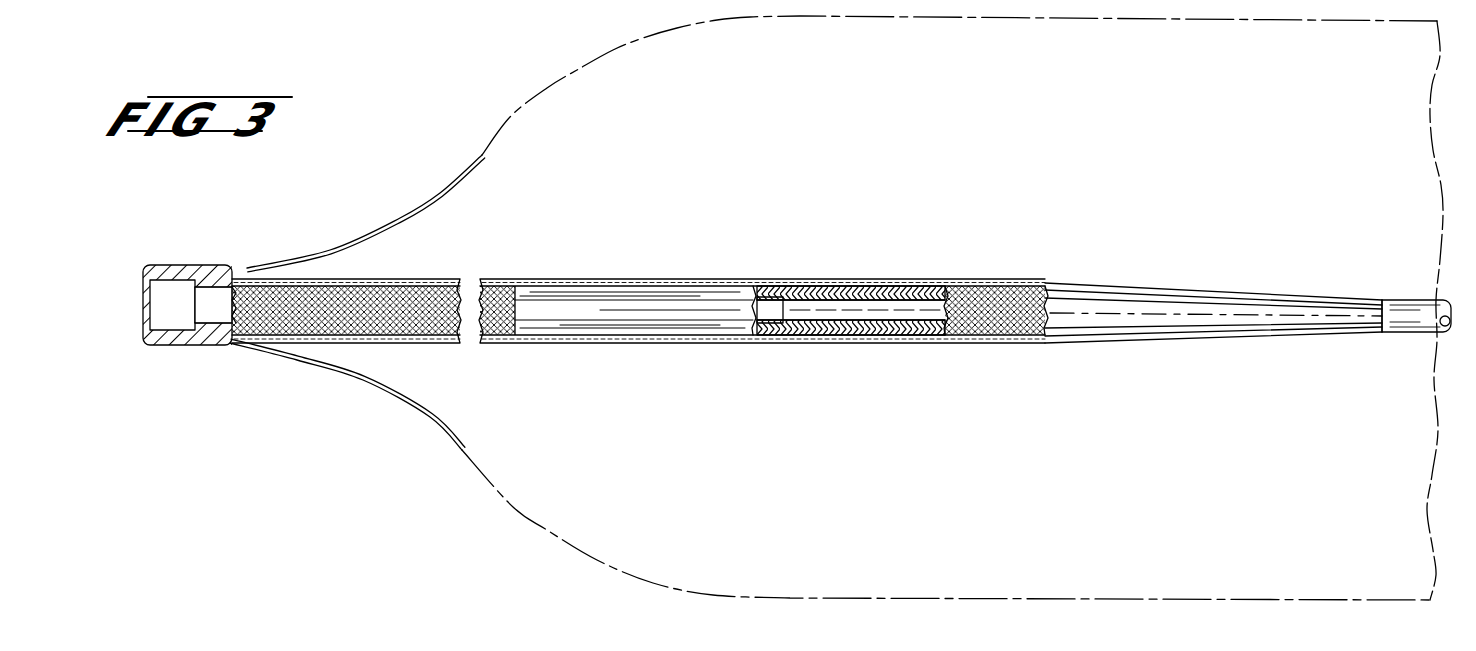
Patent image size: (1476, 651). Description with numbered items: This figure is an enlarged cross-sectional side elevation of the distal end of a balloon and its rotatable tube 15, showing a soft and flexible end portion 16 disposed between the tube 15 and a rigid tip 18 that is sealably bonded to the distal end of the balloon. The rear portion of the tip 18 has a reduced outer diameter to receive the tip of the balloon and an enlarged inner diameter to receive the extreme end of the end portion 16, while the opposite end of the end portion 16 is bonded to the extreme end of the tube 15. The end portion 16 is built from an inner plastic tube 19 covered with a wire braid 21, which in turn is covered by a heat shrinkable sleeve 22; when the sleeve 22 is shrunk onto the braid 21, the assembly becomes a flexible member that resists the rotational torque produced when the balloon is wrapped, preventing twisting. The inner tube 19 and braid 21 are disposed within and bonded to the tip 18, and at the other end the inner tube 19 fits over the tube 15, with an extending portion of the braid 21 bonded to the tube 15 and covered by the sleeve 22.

The tube 15 is at (900, 322).
The end portion 16 is at (475, 250).
The rigid tip 18 is at (145, 346).
The inner plastic tube 19 is at (190, 303).
The wire braid 21 is at (243, 315).
The heat shrinkable sleeve 22 is at (407, 277).